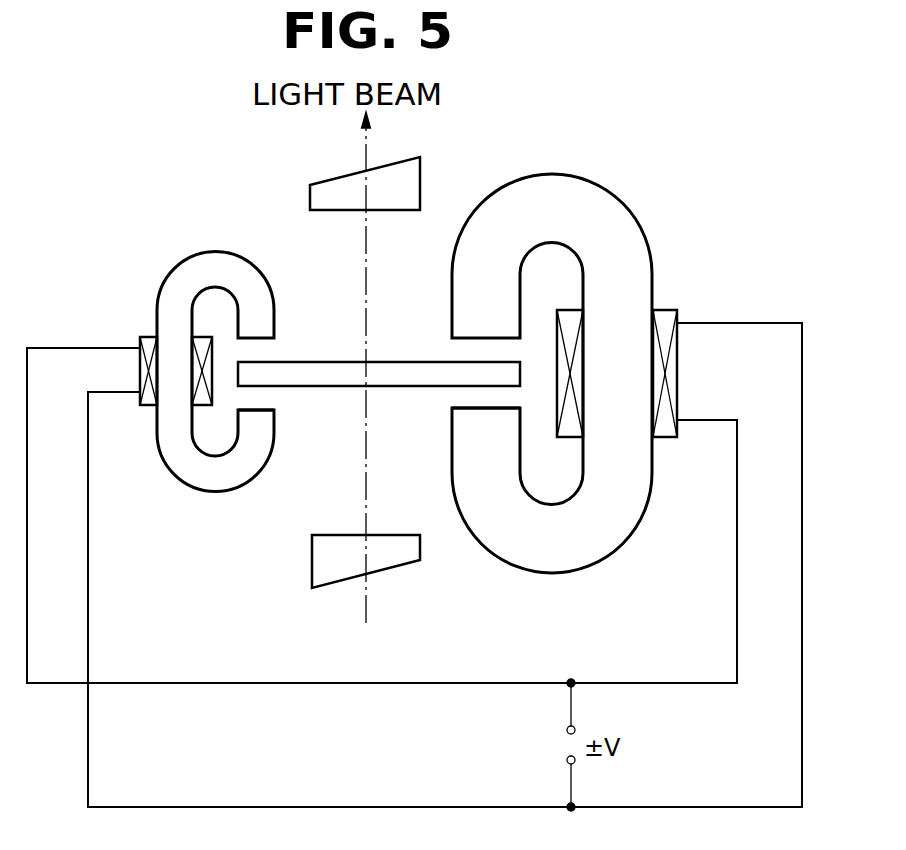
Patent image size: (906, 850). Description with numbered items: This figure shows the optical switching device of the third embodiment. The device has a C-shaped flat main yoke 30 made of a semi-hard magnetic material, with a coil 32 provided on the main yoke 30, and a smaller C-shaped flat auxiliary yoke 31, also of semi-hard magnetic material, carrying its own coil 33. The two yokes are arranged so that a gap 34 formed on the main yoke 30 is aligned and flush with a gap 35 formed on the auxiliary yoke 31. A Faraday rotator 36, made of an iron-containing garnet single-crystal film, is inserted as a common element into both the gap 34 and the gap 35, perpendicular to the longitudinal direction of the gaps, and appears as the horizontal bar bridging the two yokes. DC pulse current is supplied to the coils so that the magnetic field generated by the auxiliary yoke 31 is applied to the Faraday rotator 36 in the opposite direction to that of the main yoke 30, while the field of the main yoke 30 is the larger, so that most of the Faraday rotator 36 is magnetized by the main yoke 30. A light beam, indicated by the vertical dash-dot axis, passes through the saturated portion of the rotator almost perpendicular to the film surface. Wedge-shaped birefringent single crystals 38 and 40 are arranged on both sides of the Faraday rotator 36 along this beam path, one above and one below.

The main yoke 30 is at (593, 195).
The auxiliary yoke 31 is at (200, 265).
The coil 32 is at (664, 320).
The coil 33 is at (147, 340).
The gap 34 is at (460, 393).
The gap 35 is at (275, 400).
The Faraday rotator 36 is at (322, 368).
The wedge-shaped birefringent single crystal 38 is at (410, 556).
The wedge-shaped birefringent single crystal 40 is at (402, 168).